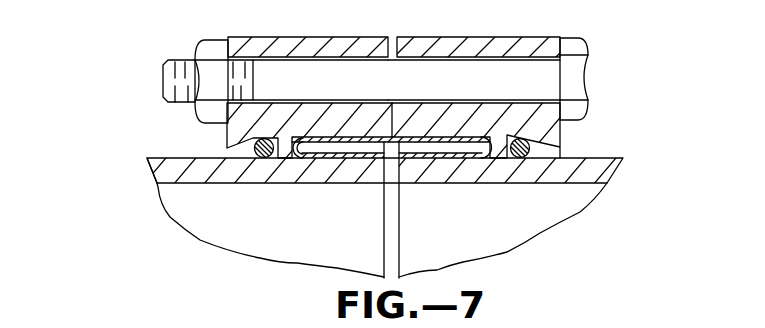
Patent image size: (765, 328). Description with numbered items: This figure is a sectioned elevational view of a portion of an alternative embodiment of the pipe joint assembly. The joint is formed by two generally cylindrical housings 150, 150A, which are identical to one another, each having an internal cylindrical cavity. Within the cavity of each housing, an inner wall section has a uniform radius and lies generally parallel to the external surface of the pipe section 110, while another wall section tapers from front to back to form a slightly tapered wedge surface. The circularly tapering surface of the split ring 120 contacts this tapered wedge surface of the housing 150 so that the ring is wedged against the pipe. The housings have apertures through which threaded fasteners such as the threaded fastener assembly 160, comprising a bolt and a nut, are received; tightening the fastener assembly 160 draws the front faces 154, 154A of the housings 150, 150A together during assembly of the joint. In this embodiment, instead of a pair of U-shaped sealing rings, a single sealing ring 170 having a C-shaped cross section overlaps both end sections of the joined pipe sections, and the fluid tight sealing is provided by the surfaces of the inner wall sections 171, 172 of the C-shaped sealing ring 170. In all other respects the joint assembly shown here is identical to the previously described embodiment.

The pipe section 110 is at (611, 148).
The split ring 120 is at (163, 151).
The housing 150 is at (515, 29).
The housing 150A is at (307, 28).
The front face 154 is at (398, 128).
The front face 154A is at (392, 128).
The threaded fastener assembly 160 is at (595, 36).
The sealing ring 170 is at (492, 163).
The inner wall section 171 is at (418, 157).
The inner wall section 172 is at (345, 158).